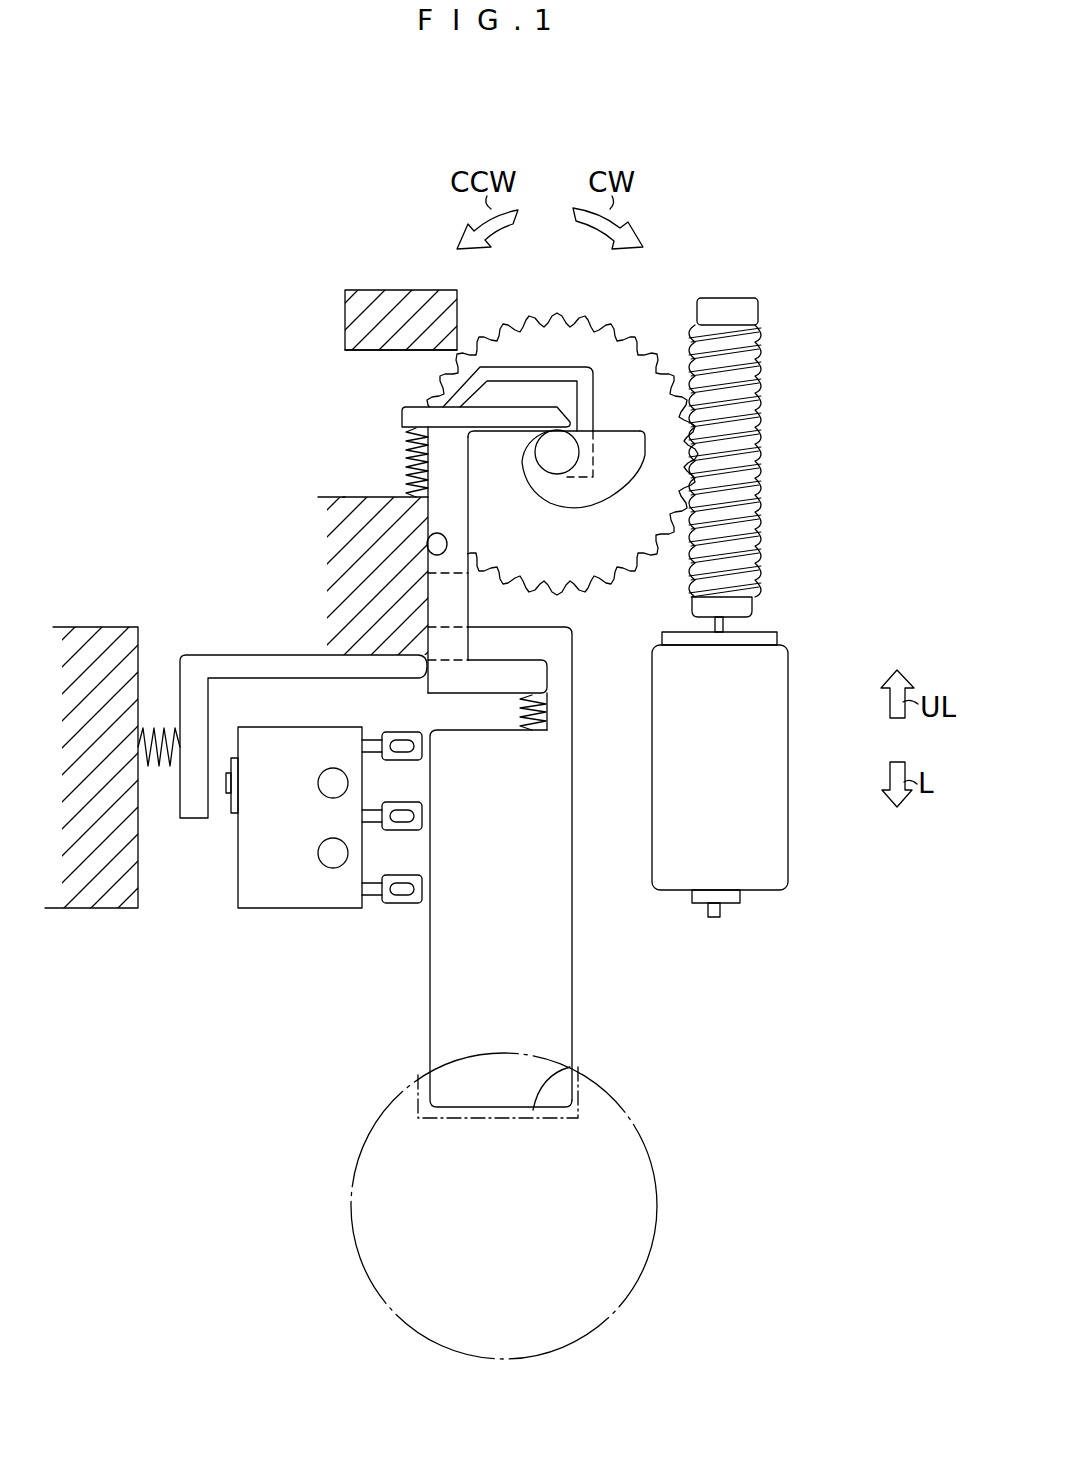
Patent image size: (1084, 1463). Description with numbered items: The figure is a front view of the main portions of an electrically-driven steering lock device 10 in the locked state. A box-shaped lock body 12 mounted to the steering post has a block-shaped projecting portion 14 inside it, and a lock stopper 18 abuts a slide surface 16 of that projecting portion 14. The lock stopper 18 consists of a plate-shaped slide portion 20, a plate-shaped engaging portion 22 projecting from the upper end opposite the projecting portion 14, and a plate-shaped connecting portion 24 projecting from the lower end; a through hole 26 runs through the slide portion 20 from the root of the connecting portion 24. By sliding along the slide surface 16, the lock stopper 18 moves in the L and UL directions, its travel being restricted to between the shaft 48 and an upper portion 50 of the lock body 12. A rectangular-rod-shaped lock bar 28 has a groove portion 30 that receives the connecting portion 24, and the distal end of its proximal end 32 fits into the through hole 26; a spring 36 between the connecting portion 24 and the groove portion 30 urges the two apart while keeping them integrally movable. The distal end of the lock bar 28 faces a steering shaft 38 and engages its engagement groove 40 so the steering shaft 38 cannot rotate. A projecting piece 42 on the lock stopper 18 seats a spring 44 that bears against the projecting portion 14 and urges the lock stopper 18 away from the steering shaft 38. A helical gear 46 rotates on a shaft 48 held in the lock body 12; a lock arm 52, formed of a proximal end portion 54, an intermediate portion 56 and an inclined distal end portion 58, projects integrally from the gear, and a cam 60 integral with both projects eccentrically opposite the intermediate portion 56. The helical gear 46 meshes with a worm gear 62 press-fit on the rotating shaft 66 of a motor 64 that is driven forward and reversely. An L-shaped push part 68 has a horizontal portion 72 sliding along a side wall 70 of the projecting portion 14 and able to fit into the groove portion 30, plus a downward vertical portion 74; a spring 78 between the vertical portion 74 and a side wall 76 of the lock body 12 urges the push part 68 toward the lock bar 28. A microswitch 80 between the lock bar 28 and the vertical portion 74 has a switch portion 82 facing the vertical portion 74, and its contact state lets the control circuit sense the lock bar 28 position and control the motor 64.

The electrically-driven steering lock device 10 is at (796, 141).
The lock body 12 is at (368, 283).
The projecting portion 14 is at (370, 493).
The slide surface 16 is at (427, 545).
The lock stopper 18 is at (478, 514).
The slide portion 20 is at (470, 546).
The engaging portion 22 is at (488, 426).
The connecting portion 24 is at (530, 679).
The through hole 26 is at (450, 573).
The lock bar 28 is at (578, 1014).
The groove portion 30 is at (458, 725).
The proximal end 32 is at (500, 632).
The spring 36 is at (503, 724).
The steering shaft 38 is at (657, 1183).
The engagement groove 40 is at (572, 1067).
The projecting piece 42 is at (417, 411).
The spring 44 is at (410, 452).
The helical gear 46 is at (557, 454).
The shaft 48 is at (555, 470).
The upper portion 50 is at (418, 288).
The lock arm 52 is at (518, 364).
The proximal end portion 54 is at (592, 400).
The intermediate portion 56 is at (556, 376).
The distal end portion 58 is at (443, 400).
The cam 60 is at (616, 465).
The worm gear 62 is at (768, 412).
The motor 64 is at (776, 800).
The rotating shaft 66 is at (723, 628).
The push part 68 is at (220, 652).
The side wall 70 is at (376, 665).
The horizontal portion 72 is at (323, 668).
The vertical portion 74 is at (177, 792).
The side wall 76 is at (133, 625).
The spring 78 is at (152, 727).
The microswitch 80 is at (292, 897).
The switch portion 82 is at (228, 792).